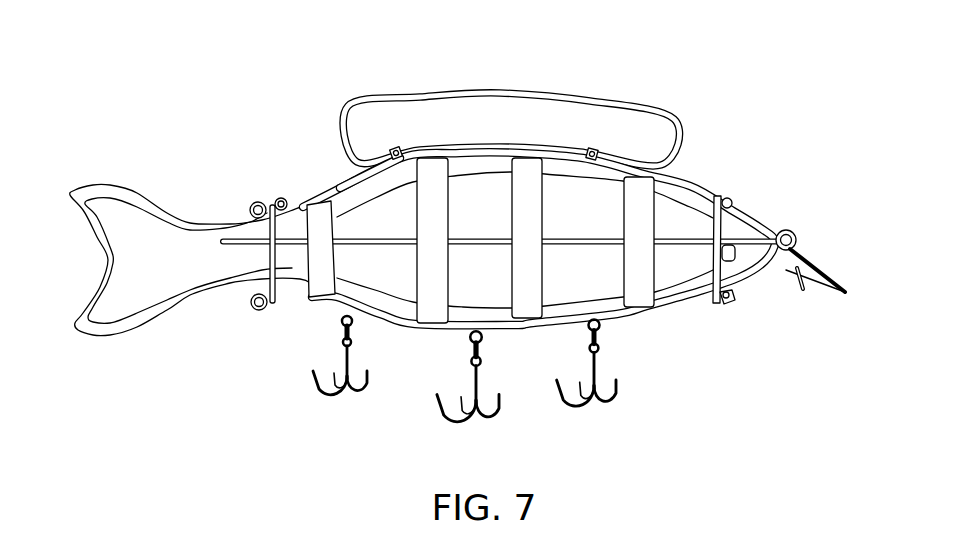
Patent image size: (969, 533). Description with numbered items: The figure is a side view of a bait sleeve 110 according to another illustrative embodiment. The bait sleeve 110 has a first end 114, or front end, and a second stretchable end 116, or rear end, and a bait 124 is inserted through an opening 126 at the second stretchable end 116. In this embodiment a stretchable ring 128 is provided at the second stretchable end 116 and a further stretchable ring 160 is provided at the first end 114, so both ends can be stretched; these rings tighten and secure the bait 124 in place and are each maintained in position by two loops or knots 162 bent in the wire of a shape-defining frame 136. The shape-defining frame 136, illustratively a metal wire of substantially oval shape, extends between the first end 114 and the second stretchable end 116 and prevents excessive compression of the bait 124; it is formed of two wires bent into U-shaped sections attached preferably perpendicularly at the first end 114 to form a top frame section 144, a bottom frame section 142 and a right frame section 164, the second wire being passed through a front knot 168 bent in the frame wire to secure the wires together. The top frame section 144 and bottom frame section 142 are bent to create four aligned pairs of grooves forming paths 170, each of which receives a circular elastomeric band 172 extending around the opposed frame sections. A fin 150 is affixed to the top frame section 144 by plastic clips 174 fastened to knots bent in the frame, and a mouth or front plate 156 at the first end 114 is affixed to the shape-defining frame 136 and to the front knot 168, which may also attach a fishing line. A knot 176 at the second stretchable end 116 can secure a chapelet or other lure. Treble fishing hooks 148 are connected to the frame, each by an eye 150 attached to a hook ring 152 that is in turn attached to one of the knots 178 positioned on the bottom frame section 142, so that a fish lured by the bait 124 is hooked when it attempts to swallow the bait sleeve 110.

The bait sleeve 110 is at (718, 73).
The first end 114 is at (760, 160).
The second stretchable end 116 is at (175, 147).
The bait 124 is at (95, 268).
The opening 126 is at (248, 294).
The stretchable ring 128 is at (273, 306).
The shape-defining frame 136 is at (686, 184).
The bottom frame section 142 is at (327, 303).
The top frame section 144 is at (334, 188).
The fishing hook 148 is at (465, 396).
The fin 150 is at (503, 90).
The hook ring 152 is at (441, 342).
The front plate 156 is at (822, 270).
The stretchable ring 160 is at (700, 288).
The knots 162 is at (255, 311).
The right frame section 164 is at (754, 243).
The front knot 168 is at (789, 230).
The paths 170 is at (650, 310).
The elastomeric bands 172 is at (533, 270).
The plastic clips 174 is at (396, 147).
The knot 176 is at (280, 197).
The knots 178 is at (502, 364).